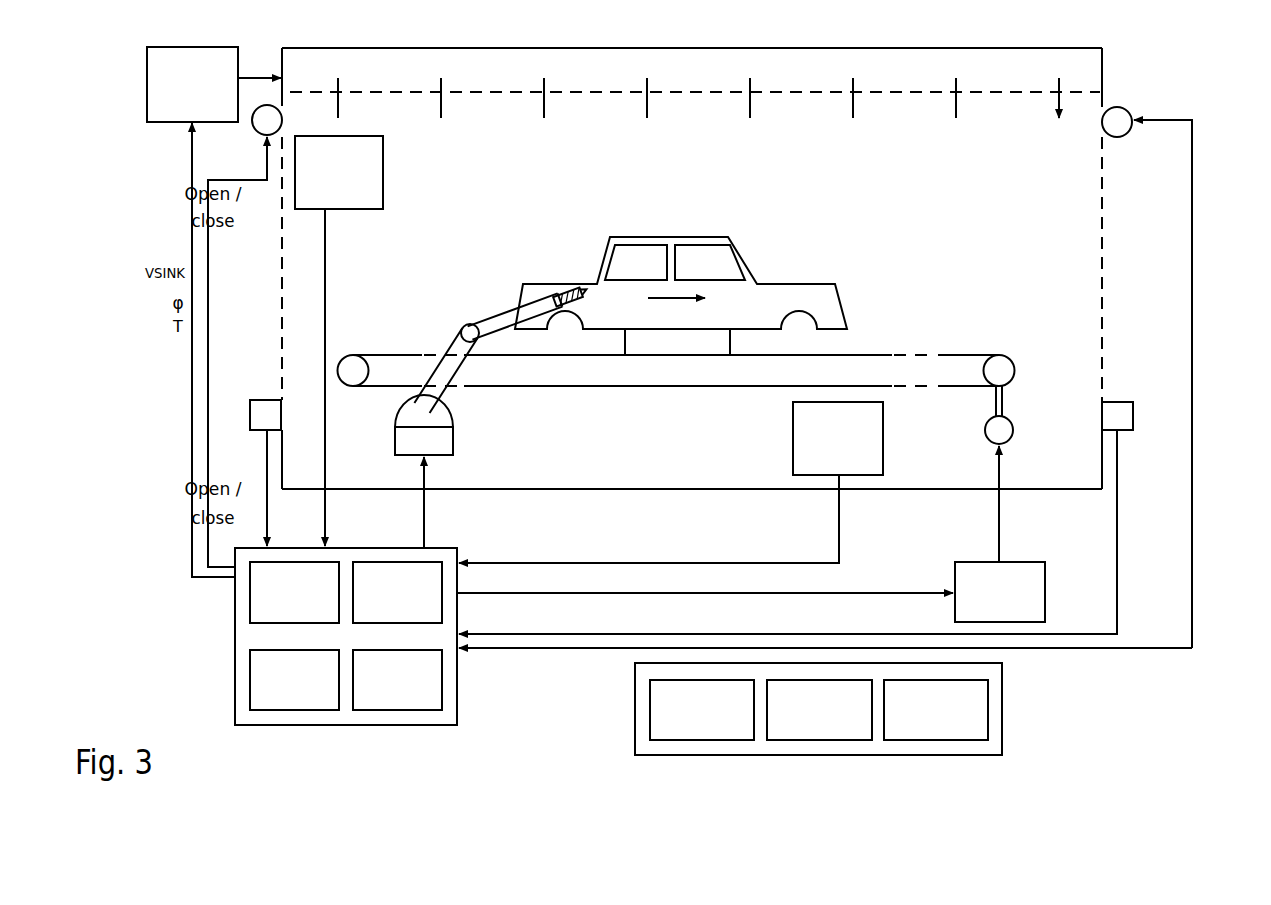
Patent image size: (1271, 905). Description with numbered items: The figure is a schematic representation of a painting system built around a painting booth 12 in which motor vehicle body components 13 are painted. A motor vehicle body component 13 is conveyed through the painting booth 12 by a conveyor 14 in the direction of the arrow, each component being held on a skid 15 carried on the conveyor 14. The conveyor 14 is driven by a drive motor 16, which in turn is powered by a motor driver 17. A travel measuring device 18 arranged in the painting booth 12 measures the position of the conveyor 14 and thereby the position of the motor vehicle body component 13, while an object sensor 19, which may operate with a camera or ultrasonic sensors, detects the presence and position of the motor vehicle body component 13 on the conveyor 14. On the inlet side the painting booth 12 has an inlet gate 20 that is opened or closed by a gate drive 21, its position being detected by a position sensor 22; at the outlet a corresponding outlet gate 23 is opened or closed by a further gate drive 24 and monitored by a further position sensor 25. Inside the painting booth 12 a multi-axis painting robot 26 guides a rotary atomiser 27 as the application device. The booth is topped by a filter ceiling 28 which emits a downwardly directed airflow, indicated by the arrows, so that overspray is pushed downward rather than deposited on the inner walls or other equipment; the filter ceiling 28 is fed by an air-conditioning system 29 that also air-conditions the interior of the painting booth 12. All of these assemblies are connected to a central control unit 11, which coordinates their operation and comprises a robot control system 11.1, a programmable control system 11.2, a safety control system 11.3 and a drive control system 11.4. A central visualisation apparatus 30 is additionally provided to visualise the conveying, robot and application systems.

The central control unit 11 is at (463, 668).
The robot control system 11.1 is at (250, 598).
The programmable control system 11.2 is at (442, 605).
The safety control system 11.3 is at (250, 680).
The drive control system 11.4 is at (442, 695).
The painting booth 12 is at (664, 497).
The motor vehicle body component 13 is at (852, 300).
The conveyor 14 is at (1021, 372).
The skid 15 is at (665, 343).
The drive motor 16 is at (1014, 432).
The motor driver 17 is at (955, 572).
The travel measuring device 18 is at (793, 440).
The object sensor 19 is at (383, 170).
The inlet gate 20 is at (282, 258).
The gate drive 21 is at (265, 125).
The position sensor 22 is at (262, 400).
The outlet gate 23 is at (1103, 242).
The gate drive 24 is at (1117, 118).
The position sensor 25 is at (1118, 402).
The painting robot 26 is at (463, 437).
The rotary atomiser 27 is at (575, 289).
The filter ceiling 28 is at (487, 68).
The air-conditioning system 29 is at (147, 70).
The central visualisation apparatus 30 is at (1023, 685).